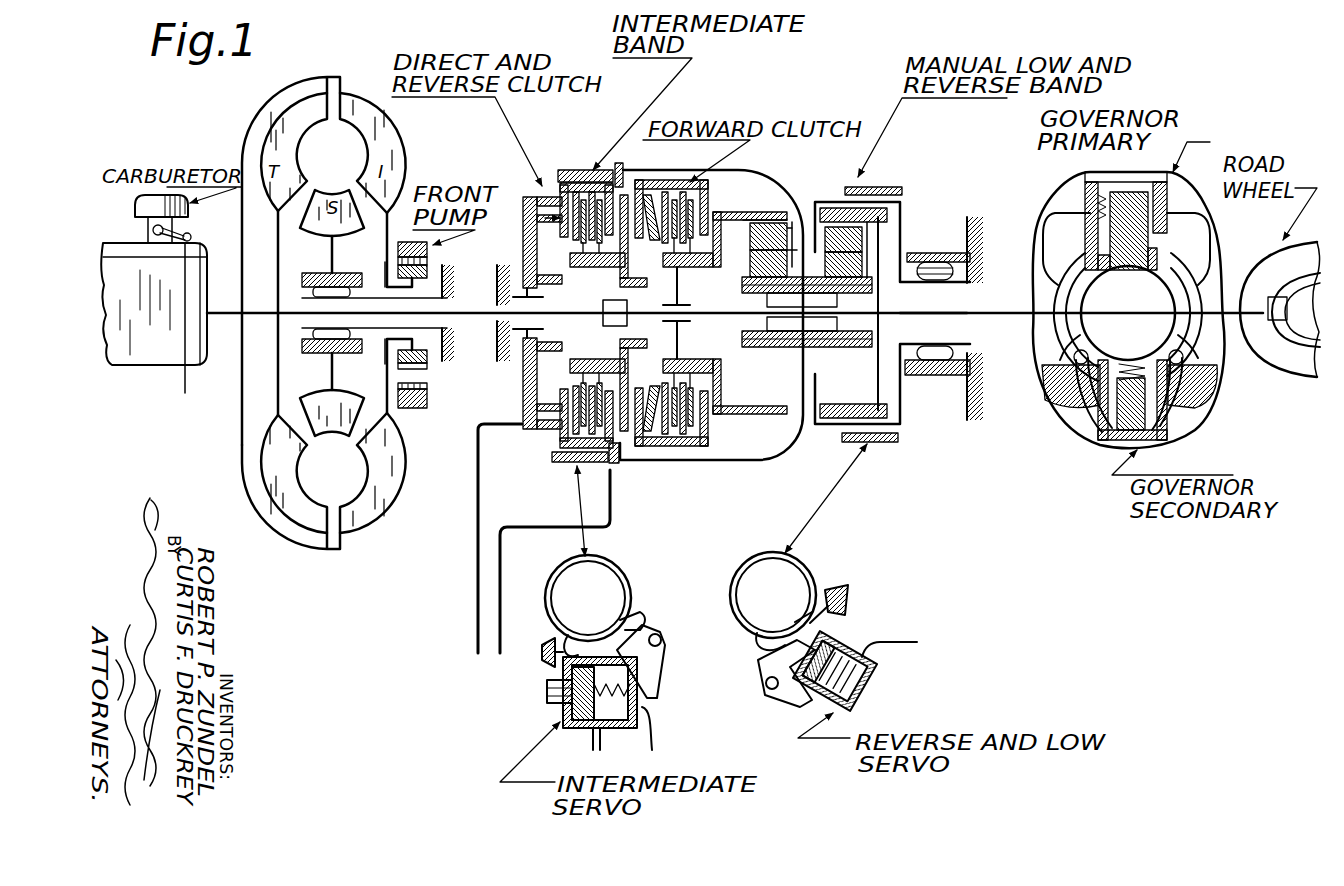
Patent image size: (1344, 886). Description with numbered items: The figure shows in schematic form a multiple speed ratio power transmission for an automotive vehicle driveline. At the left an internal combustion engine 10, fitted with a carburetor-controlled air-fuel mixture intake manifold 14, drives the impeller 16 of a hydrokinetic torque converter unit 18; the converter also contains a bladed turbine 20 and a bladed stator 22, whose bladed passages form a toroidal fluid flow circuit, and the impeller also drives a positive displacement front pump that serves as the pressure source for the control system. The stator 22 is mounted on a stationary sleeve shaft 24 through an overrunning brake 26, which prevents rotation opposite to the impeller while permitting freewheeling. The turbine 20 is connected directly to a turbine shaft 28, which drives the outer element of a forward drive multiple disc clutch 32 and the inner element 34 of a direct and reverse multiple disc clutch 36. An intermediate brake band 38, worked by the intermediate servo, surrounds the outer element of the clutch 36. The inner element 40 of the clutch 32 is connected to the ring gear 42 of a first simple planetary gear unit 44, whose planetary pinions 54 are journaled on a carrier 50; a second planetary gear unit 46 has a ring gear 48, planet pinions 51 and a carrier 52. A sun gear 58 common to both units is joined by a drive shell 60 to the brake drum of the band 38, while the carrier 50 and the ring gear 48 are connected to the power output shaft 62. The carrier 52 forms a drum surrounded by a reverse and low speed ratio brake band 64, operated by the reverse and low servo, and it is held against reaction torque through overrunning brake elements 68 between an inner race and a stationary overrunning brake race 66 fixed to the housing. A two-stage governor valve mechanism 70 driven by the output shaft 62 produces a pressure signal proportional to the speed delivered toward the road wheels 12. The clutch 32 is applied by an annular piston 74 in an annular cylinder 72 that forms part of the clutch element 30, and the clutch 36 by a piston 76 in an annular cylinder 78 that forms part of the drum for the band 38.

The internal combustion engine 10 is at (138, 366).
The road wheels 12 is at (1282, 366).
The air-fuel mixture intake manifold 14 is at (172, 224).
The impeller 16 is at (354, 96).
The hydrokinetic torque converter unit 18 is at (322, 88).
The turbine 20 is at (276, 122).
The stator 22 is at (320, 230).
The stationary sleeve shaft 24 is at (373, 262).
The overrunning brake 26 is at (325, 353).
The turbine shaft 28 is at (452, 285).
The clutch element 30 is at (668, 180).
The forward drive multiple disc clutch 32 is at (702, 426).
The inner element 34 is at (590, 267).
The direct and reverse multiple disc clutch 36 is at (522, 200).
The intermediate brake band 38 is at (587, 170).
The inner element 40 is at (677, 267).
The ring gear 42 is at (794, 230).
The first simple planetary gear unit 44 is at (818, 208).
The second planetary gear unit 46 is at (866, 234).
The ring gear 48 is at (875, 187).
The carrier 50 is at (750, 252).
The planet pinions 51 is at (865, 264).
The carrier 52 is at (832, 202).
The planetary pinions 54 is at (762, 212).
The sun gear 58 is at (822, 347).
The drive shell 60 is at (725, 455).
The power output shaft 62 is at (958, 316).
The reverse and low speed ratio brake band 64 is at (892, 215).
The stationary overrunning brake race 66 is at (938, 376).
The overrunning brake elements 68 is at (953, 281).
The two-stage governor valve mechanism 70 is at (1053, 430).
The annular cylinder 72 is at (629, 350).
The annular piston 74 is at (620, 362).
The piston 76 is at (522, 248).
The annular cylinder 78 is at (522, 377).